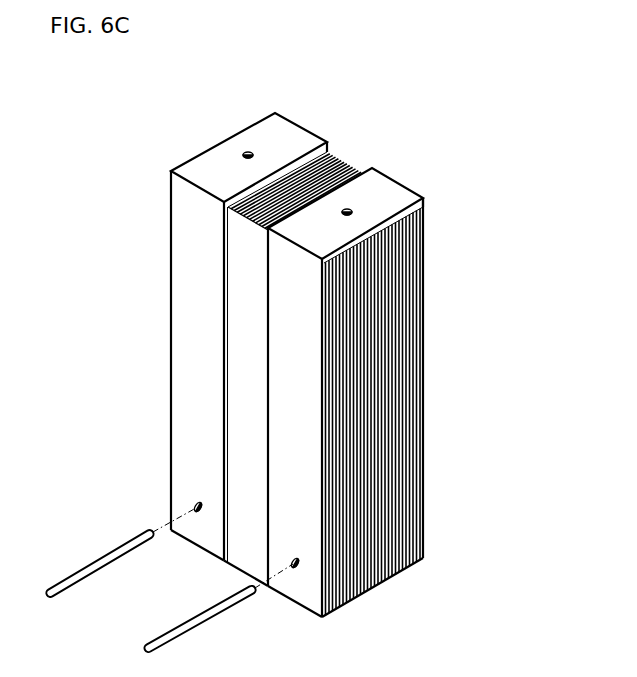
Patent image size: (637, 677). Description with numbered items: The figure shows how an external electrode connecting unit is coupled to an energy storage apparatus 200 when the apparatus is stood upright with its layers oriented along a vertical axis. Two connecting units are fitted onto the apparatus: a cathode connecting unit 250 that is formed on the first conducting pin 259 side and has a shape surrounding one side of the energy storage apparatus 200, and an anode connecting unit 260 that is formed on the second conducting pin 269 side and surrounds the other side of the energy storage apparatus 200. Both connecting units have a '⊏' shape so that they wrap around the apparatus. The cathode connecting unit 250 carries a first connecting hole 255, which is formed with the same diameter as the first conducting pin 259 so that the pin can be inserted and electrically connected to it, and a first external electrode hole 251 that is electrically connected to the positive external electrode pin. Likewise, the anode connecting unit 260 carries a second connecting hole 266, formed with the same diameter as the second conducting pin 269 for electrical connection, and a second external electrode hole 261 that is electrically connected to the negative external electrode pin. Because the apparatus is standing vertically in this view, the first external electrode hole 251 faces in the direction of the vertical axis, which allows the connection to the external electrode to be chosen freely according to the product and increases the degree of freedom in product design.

The energy storage apparatus 200 is at (242, 406).
The cathode connecting unit 250 is at (282, 137).
The first external electrode hole 251 is at (247, 154).
The first connecting hole 255 is at (193, 508).
The first conducting pin 259 is at (100, 572).
The anode connecting unit 260 is at (375, 191).
The second external electrode hole 261 is at (353, 212).
The second connecting hole 266 is at (301, 565).
The second conducting pin 269 is at (197, 628).